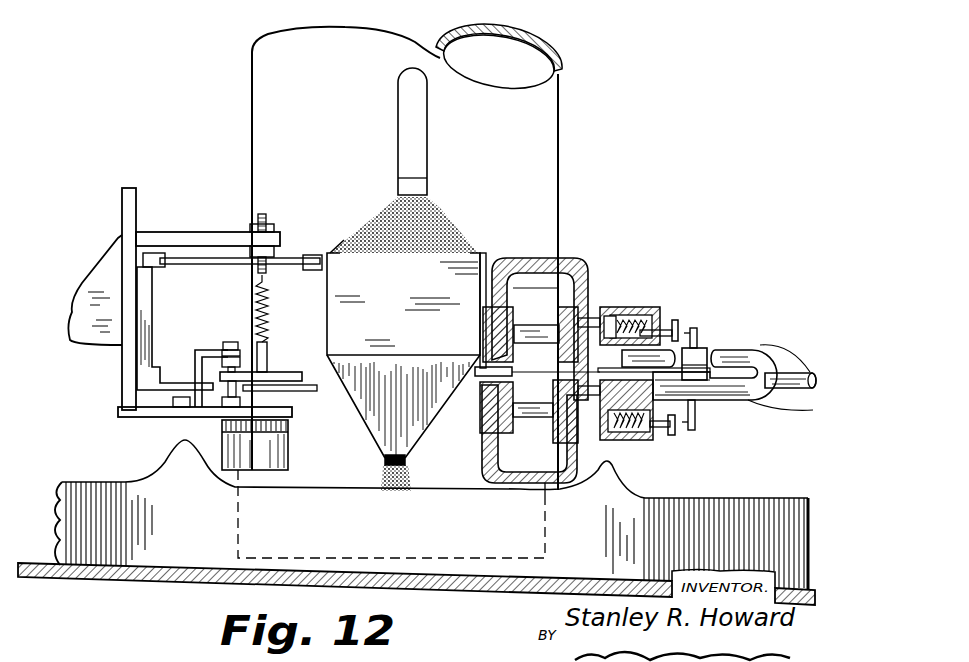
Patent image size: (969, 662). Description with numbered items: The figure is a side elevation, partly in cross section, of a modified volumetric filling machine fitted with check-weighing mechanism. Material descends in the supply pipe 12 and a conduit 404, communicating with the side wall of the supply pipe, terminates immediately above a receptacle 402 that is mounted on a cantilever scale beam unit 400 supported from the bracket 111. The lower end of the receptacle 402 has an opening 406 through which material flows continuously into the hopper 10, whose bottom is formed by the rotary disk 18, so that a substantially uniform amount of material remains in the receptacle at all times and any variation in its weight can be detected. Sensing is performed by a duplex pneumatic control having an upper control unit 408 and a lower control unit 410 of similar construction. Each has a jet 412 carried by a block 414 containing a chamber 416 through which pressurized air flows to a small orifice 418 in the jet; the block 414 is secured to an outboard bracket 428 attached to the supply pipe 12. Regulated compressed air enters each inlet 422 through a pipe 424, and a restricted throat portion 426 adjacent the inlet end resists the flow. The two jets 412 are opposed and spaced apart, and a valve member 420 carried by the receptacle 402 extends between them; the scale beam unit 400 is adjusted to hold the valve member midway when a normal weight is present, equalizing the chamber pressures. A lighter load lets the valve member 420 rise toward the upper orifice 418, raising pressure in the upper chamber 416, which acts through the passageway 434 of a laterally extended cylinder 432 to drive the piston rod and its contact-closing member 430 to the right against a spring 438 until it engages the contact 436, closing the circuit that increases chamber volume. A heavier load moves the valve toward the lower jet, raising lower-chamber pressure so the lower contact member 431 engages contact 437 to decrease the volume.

The hopper 10 is at (118, 487).
The supply pipe 12 is at (556, 134).
The rotary disk 18 is at (58, 576).
The bracket 111 is at (120, 250).
The cantilever scale beam unit 400 is at (206, 229).
The receptacle 402 is at (360, 245).
The conduit 404 is at (428, 143).
The opening 406 is at (407, 463).
The upper control unit 408 is at (570, 243).
The lower control unit 410 is at (488, 480).
The jet 412 is at (611, 367).
The block 414 is at (535, 296).
The chamber 416 is at (533, 268).
The orifice 418 is at (500, 350).
The valve member 420 is at (485, 367).
The inlet 422 is at (640, 308).
The pipe 424 is at (732, 343).
The restricted throat portion 426 is at (608, 303).
The outboard bracket 428 is at (720, 414).
The contact-closing member 430 is at (675, 327).
The lower contact member 431 is at (672, 430).
The cylinder 432 is at (622, 305).
The passageway 434 is at (582, 327).
The contact 436 is at (697, 333).
The contact 437 is at (695, 430).
The spring 438 is at (650, 308).